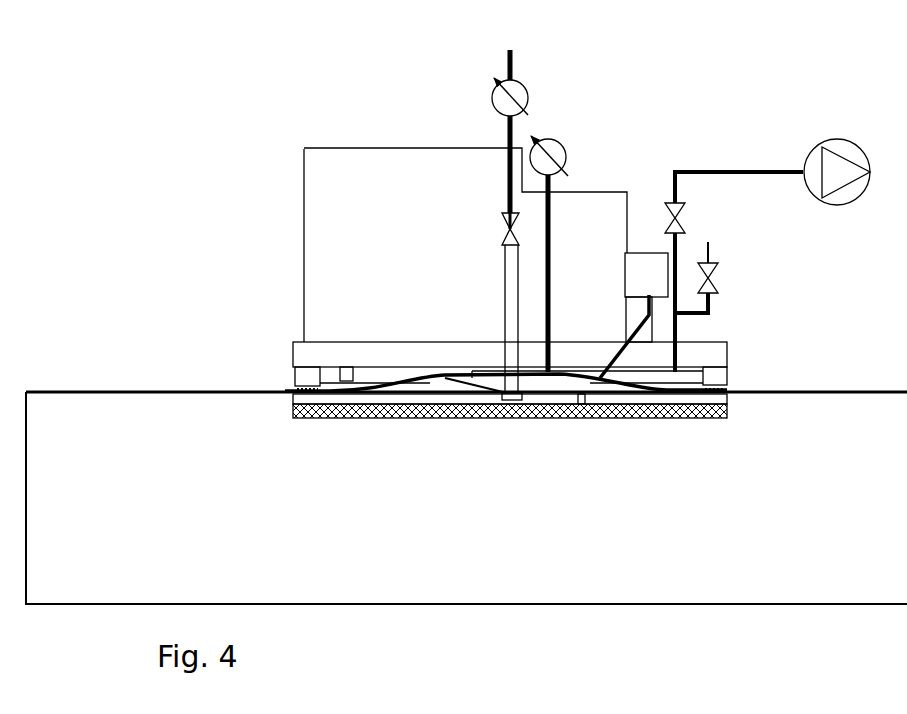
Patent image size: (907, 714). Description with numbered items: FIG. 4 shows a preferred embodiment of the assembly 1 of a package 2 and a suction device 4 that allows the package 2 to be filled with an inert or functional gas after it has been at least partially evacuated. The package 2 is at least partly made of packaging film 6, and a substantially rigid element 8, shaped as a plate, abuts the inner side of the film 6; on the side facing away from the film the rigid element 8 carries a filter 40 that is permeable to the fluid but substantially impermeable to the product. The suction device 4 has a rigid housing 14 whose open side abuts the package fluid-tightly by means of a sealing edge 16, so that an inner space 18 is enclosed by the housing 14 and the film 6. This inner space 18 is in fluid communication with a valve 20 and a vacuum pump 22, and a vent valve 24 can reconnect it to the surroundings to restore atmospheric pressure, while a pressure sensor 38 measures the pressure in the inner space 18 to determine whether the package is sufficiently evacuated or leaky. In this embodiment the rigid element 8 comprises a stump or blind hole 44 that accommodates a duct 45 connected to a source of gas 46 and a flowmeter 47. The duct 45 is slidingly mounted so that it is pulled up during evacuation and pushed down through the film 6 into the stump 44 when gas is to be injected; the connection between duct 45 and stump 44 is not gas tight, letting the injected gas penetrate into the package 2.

The assembly 1 is at (243, 173).
The package 2 is at (180, 391).
The suction device 4 is at (240, 287).
The packaging film 6 is at (634, 315).
The substantially rigid element 8 is at (732, 397).
The rigid housing 14 is at (730, 354).
The sealing edge 16 is at (728, 388).
The inner space 18 is at (375, 378).
The valve 20 is at (688, 218).
The vacuum pump 22 is at (837, 139).
The vent valve 24 is at (722, 278).
The pressure sensor 38 is at (569, 157).
The filter 40 is at (728, 413).
The stump 44 is at (453, 385).
The duct 45 is at (503, 283).
The source of gas 46 is at (507, 170).
The flowmeter 47 is at (530, 93).